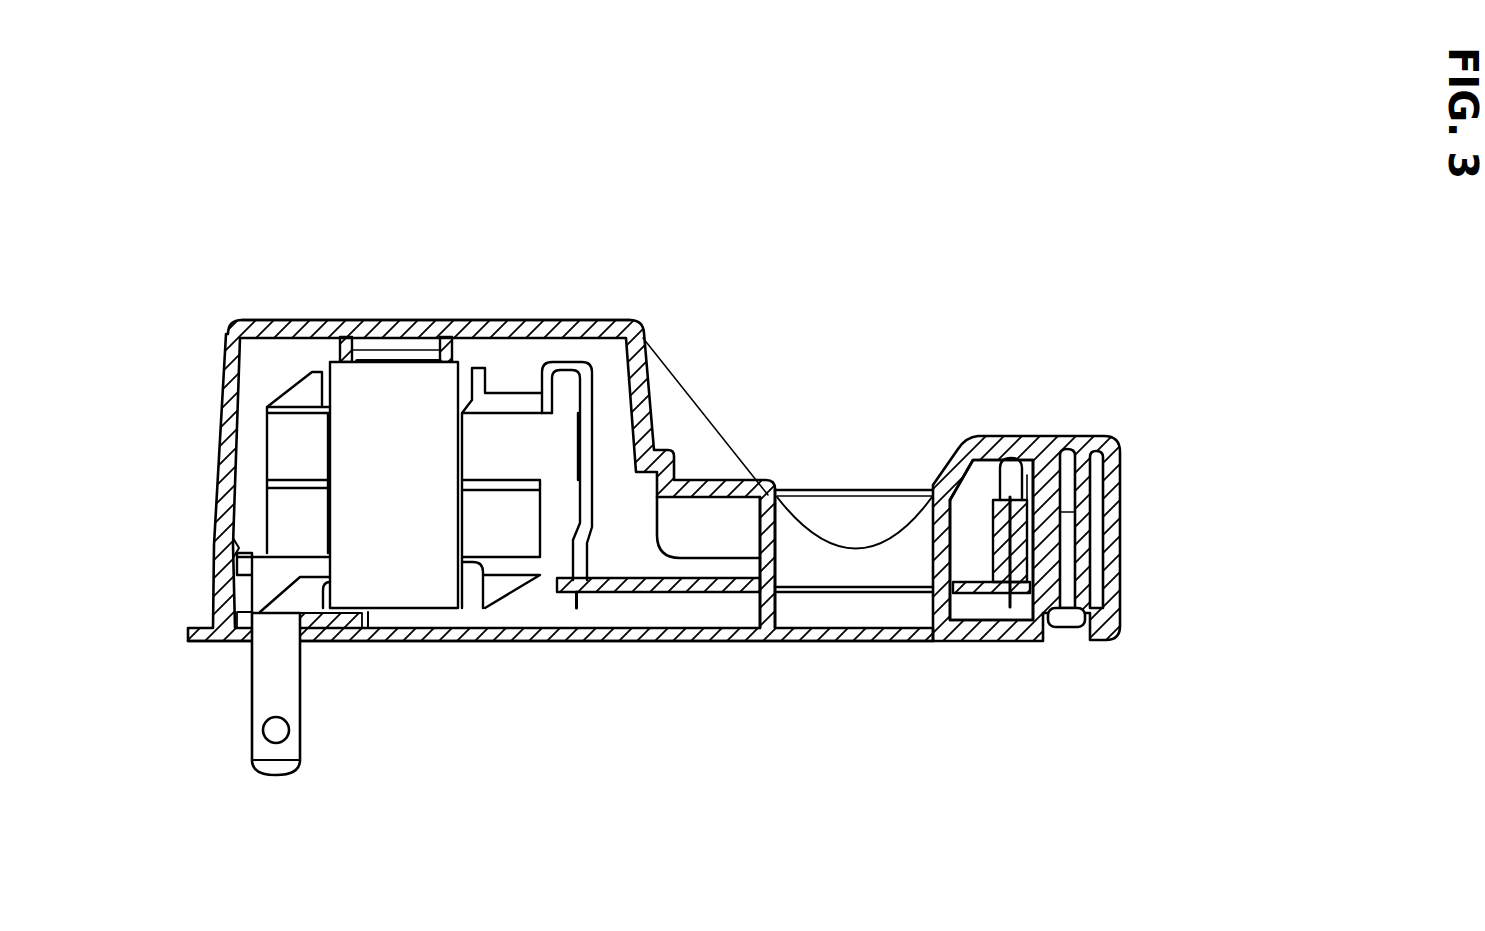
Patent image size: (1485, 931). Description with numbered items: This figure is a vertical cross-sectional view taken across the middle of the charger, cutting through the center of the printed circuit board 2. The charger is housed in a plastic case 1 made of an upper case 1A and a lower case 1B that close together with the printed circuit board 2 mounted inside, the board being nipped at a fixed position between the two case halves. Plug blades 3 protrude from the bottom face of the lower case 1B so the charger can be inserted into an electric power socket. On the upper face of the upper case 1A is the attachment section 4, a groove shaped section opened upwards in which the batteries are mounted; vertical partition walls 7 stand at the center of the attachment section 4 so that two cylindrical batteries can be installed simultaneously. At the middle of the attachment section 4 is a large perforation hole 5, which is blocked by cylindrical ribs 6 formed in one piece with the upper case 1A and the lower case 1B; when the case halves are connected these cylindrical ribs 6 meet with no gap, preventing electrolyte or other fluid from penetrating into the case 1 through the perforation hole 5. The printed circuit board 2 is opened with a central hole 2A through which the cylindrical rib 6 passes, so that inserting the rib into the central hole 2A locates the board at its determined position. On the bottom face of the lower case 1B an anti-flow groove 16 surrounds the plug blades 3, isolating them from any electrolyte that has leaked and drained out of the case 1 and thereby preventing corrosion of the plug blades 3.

The case 1 is at (549, 459).
The upper case 1A is at (553, 330).
The lower case 1B is at (497, 632).
The printed circuit board 2 is at (652, 584).
The central hole 2A is at (748, 607).
The plug blades 3 is at (262, 700).
The attachment section 4 is at (880, 416).
The perforation hole 5 is at (819, 656).
The cylindrical ribs 6 is at (793, 548).
The vertical partition walls 7 is at (727, 513).
The anti-flow groove 16 is at (367, 647).